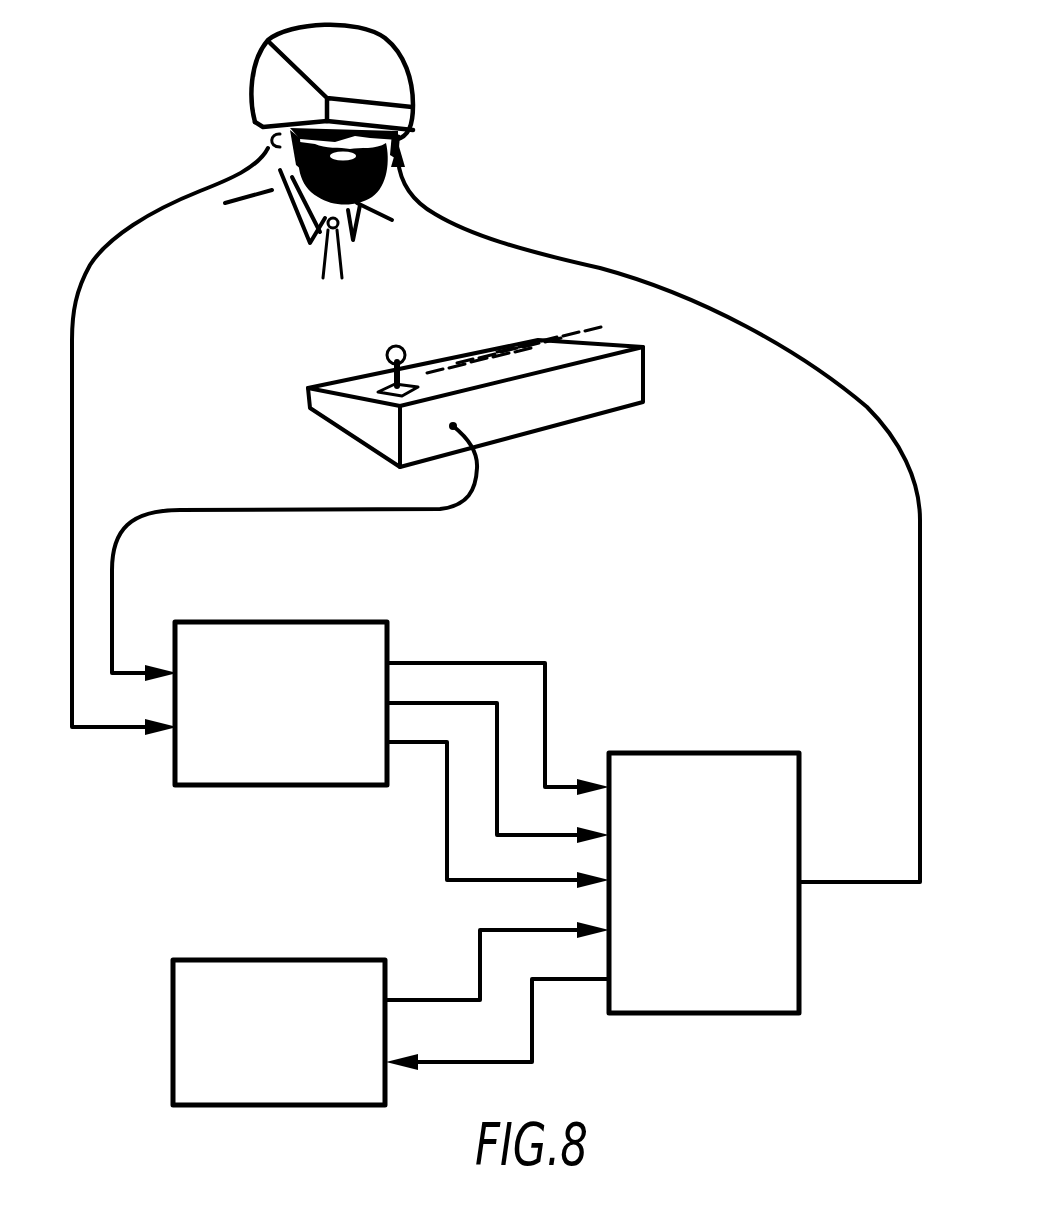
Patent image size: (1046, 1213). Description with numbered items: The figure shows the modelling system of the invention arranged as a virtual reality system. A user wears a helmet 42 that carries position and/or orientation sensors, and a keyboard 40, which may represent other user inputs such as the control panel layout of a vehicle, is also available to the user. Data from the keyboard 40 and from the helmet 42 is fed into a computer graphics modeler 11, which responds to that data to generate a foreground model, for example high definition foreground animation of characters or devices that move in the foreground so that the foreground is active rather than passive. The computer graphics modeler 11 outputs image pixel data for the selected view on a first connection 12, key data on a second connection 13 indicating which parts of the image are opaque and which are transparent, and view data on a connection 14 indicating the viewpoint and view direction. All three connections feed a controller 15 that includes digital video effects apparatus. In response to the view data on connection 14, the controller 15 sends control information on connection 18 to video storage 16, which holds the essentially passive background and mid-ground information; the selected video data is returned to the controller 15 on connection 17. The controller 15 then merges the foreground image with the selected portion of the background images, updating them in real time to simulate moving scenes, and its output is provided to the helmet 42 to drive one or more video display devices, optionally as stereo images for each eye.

The computer graphics modeler 11 is at (268, 622).
The first connection 12 is at (447, 663).
The second connection 13 is at (467, 703).
The connection 14 is at (447, 833).
The controller 15 is at (698, 753).
The video storage 16 is at (298, 960).
The connection 17 is at (433, 1000).
The connection 18 is at (488, 1062).
The keyboard 40 is at (567, 402).
The helmet 42 is at (362, 62).